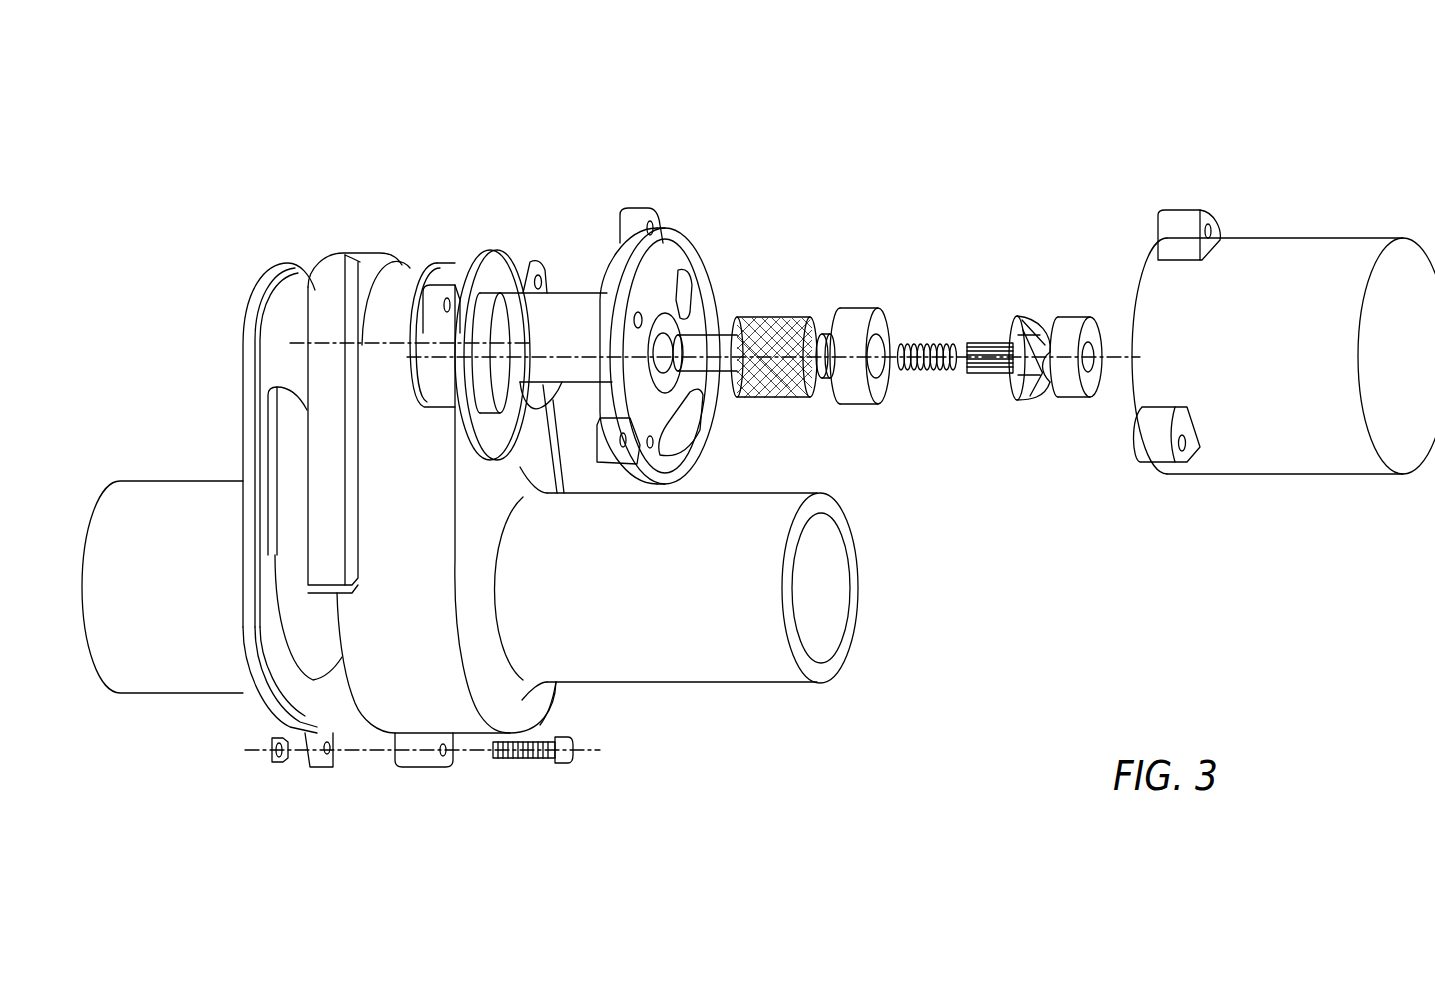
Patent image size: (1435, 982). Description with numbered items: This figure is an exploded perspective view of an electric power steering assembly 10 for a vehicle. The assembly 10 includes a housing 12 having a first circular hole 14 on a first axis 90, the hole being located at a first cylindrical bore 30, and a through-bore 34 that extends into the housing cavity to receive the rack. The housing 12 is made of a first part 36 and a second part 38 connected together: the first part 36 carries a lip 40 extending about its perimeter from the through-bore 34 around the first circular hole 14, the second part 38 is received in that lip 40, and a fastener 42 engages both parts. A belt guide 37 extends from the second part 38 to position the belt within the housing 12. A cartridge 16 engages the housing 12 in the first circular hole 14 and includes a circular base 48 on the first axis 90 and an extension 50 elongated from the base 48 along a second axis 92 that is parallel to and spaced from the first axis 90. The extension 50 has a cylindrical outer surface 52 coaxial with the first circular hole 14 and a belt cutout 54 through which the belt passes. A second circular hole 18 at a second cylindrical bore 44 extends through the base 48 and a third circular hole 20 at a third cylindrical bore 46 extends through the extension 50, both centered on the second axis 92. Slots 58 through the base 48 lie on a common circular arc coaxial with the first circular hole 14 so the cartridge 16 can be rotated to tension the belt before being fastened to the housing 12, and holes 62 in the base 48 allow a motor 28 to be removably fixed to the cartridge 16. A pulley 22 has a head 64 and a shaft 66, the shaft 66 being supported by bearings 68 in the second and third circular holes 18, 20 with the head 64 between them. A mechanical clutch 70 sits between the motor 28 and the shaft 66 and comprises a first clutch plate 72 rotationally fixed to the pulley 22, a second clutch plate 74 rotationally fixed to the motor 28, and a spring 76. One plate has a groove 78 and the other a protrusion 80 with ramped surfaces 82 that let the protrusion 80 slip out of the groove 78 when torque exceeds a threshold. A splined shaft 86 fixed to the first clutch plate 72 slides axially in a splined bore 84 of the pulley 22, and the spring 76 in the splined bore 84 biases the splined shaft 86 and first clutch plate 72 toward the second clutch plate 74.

The electric power steering assembly 10 is at (175, 168).
The housing 12 is at (212, 540).
The first circular hole 14 is at (506, 441).
The cartridge 16 is at (710, 200).
The second circular hole 18 is at (721, 382).
The third circular hole 20 is at (561, 471).
The pulley 22 is at (805, 208).
The motor 28 is at (1307, 270).
The first cylindrical bore 30 is at (485, 275).
The through-bore 34 is at (823, 630).
The first part 36 is at (556, 708).
The belt guide 37 is at (292, 472).
The second part 38 is at (250, 720).
The lip 40 is at (355, 262).
The fastener 42 is at (522, 758).
The second cylindrical bore 44 is at (676, 390).
The third cylindrical bore 46 is at (562, 495).
The base 48 is at (693, 448).
The extension 50 is at (570, 312).
The cylindrical outer surface 52 is at (542, 264).
The belt cutout 54 is at (587, 390).
The slots 58 is at (641, 316).
The holes 62 is at (650, 222).
The head 64 is at (790, 318).
The shaft 66 is at (718, 350).
The bearings 68 is at (690, 310).
The mechanical clutch 70 is at (925, 372).
The first clutch plate 72 is at (1035, 361).
The second clutch plate 74 is at (1070, 396).
The spring 76 is at (985, 332).
The groove 78 is at (1047, 345).
The protrusion 80 is at (1013, 335).
The ramped surfaces 82 is at (1027, 335).
The splined bore 84 is at (826, 375).
The splined shaft 86 is at (990, 375).
The first axis 90 is at (398, 298).
The second axis 92 is at (424, 400).